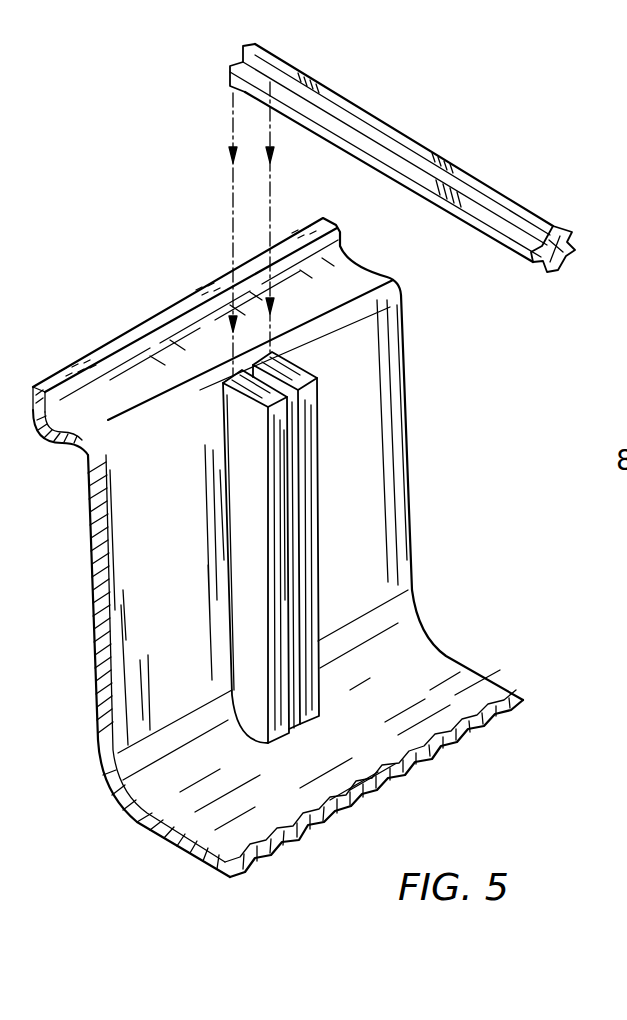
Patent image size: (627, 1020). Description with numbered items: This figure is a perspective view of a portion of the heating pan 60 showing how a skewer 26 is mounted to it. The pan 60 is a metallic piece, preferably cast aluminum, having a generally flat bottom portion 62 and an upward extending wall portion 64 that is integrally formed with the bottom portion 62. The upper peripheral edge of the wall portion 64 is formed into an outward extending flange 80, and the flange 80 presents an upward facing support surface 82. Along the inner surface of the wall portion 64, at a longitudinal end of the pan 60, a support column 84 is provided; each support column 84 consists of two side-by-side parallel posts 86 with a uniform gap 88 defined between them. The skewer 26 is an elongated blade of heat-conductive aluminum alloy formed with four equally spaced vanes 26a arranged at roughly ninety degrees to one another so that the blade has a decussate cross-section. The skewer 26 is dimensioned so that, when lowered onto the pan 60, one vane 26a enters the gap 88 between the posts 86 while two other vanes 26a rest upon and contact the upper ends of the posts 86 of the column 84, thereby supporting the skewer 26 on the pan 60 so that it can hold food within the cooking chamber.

The skewer 26 is at (460, 155).
The vane 26a is at (561, 226).
The pan 60 is at (420, 498).
The bottom portion 62 is at (440, 703).
The wall portion 64 is at (368, 577).
The flange 80 is at (60, 435).
The support surface 82 is at (143, 380).
The support column 84 is at (263, 547).
The post 86 is at (240, 466).
The gap 88 is at (296, 420).